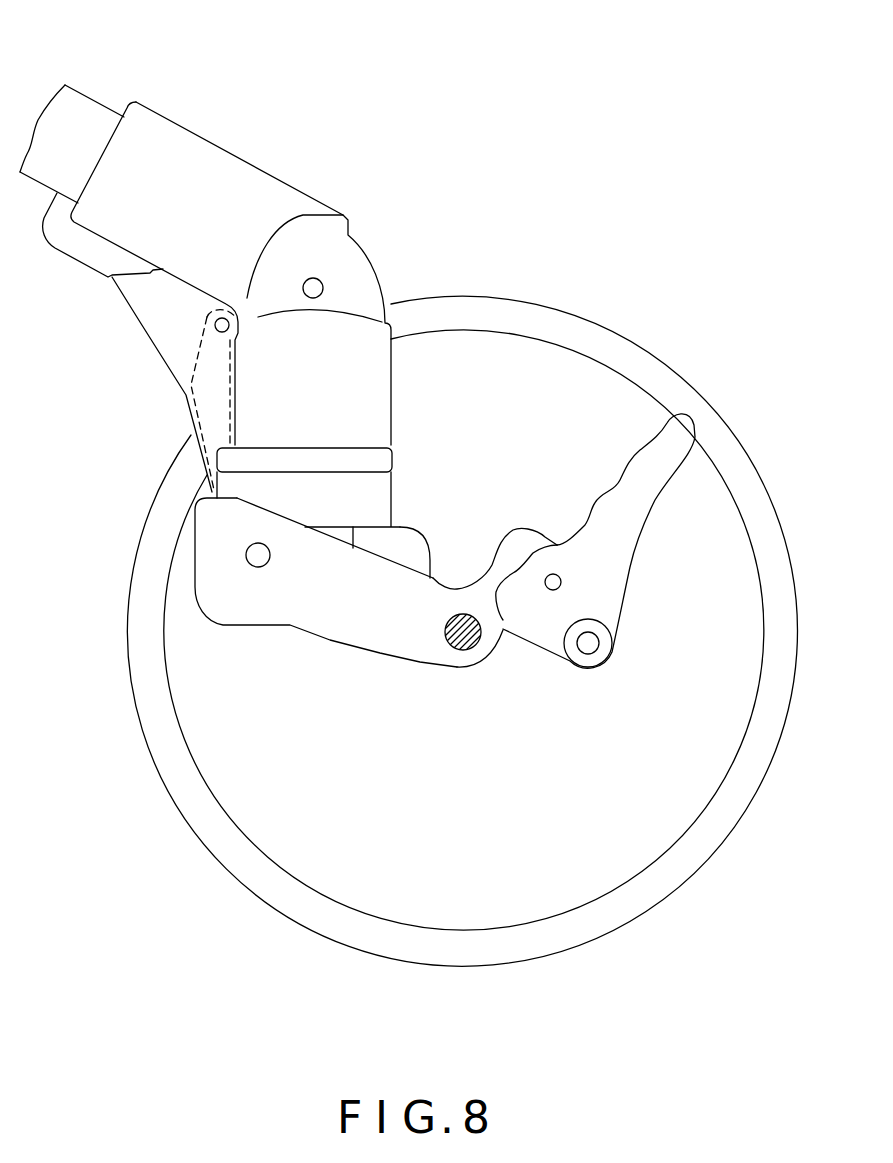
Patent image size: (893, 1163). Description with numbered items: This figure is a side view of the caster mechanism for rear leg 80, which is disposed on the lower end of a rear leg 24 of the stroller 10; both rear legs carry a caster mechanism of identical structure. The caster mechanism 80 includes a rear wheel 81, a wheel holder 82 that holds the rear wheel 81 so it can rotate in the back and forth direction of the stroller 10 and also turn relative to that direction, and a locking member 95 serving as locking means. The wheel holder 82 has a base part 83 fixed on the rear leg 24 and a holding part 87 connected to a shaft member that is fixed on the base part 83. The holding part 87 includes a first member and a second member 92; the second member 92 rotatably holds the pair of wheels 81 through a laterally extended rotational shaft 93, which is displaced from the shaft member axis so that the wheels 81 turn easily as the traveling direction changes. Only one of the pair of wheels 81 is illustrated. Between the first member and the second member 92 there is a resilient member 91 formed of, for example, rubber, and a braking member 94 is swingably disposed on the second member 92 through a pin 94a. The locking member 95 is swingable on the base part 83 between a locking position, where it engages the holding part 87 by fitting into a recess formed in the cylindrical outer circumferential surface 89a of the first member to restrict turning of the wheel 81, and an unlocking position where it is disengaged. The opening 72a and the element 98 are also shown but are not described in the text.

The stroller 10 is at (770, 117).
The rear leg 24 is at (97, 115).
The caster mechanism for rear leg 80 is at (547, 128).
The rear wheel 81 is at (322, 918).
The wheel holder 82 is at (260, 273).
The base part 83 is at (340, 265).
The holding part 87 is at (326, 633).
The bracket hole 72a is at (258, 555).
The cylindrical outer circumferential surface 89a is at (228, 488).
The resilient member 91 is at (422, 557).
The second member 92 is at (460, 631).
The rotational shaft 93 is at (458, 640).
The braking member 94 is at (612, 541).
The pin 94a is at (561, 582).
The locking member 95 is at (215, 408).
The collar 98 is at (365, 497).